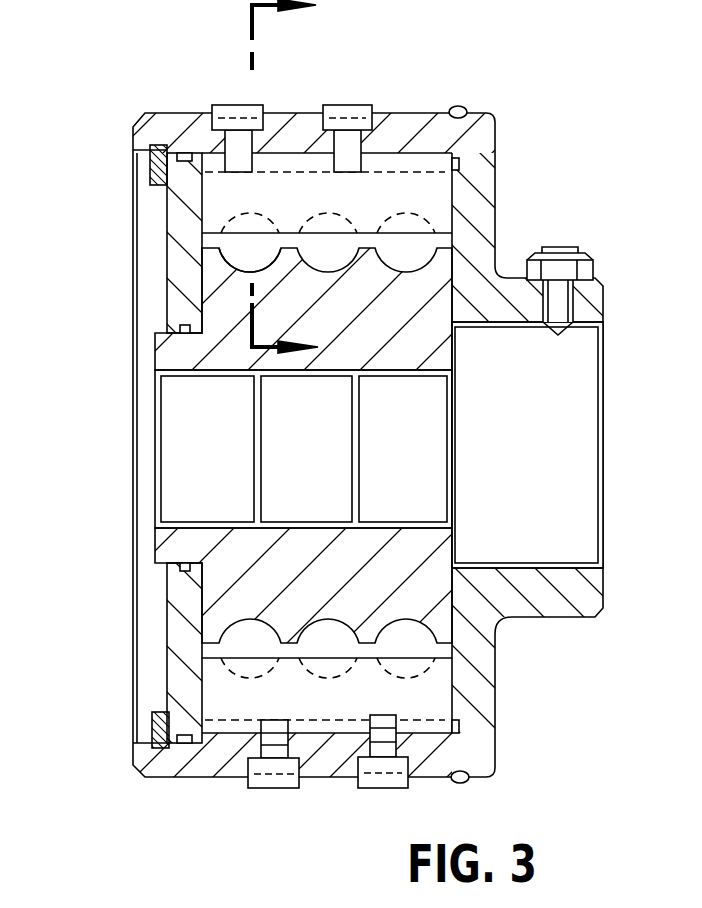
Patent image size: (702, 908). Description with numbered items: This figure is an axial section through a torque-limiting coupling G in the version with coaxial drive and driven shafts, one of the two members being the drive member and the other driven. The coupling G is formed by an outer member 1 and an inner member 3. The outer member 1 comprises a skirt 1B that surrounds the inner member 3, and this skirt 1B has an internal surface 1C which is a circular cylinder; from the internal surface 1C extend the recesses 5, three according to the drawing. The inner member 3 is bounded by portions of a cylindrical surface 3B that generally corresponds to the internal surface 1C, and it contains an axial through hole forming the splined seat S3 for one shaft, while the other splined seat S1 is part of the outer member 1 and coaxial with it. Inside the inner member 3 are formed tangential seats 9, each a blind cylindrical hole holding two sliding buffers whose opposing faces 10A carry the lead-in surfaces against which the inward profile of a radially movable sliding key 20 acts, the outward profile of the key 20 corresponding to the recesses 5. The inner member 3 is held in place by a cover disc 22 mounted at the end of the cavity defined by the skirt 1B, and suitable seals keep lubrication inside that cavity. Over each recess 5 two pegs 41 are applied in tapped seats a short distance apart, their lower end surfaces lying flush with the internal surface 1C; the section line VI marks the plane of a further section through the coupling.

The outer member 1 is at (133, 110).
The torque-limiting coupling G is at (433, 100).
The recess 5 is at (458, 165).
The opposing face of buffer 10A is at (410, 263).
The tangential seat 9 is at (225, 266).
The sliding key 20 is at (220, 197).
The cover disc 22 is at (182, 263).
The peg 41 is at (243, 105).
The internal surface of skirt 1C is at (273, 180).
The inner member 3 is at (210, 606).
The cylindrical surface 3B is at (350, 720).
The skirt 1B is at (200, 760).
The splined seat S1 is at (553, 560).
The splined seat S3 is at (213, 522).
The section line VI is at (299, 181).